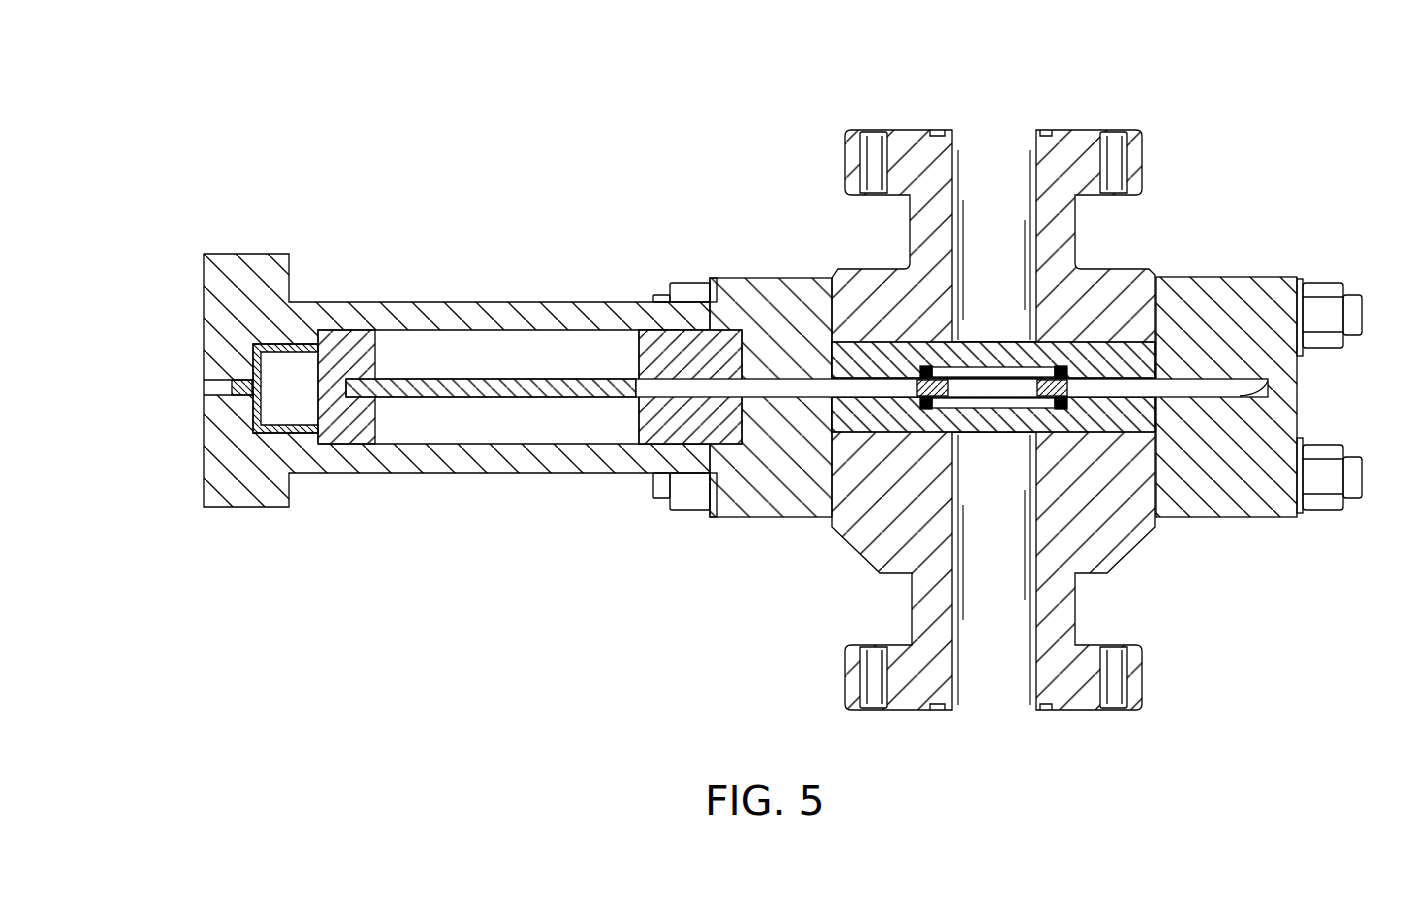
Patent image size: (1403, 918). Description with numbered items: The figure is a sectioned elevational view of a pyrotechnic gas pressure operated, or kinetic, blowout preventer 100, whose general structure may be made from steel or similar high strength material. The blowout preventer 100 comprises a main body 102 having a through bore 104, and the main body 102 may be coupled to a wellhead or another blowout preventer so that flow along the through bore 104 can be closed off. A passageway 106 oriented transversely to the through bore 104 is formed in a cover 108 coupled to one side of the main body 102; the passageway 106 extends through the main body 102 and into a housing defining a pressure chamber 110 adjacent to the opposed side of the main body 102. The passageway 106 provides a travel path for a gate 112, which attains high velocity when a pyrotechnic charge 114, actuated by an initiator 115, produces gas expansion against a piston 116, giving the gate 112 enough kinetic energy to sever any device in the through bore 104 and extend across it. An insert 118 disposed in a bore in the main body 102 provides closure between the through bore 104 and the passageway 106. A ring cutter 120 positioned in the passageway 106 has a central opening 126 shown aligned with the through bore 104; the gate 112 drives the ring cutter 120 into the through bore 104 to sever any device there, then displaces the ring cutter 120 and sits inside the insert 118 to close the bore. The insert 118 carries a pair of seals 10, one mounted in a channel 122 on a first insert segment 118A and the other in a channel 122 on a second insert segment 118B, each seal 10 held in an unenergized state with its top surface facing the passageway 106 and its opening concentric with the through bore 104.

The pyrotechnic gas pressure operated blowout preventer 100 is at (1196, 119).
The main body 102 is at (1077, 130).
The through bore 104 is at (1016, 178).
The passageway 106 is at (1270, 387).
The cover 108 is at (1262, 277).
The seal 10 is at (893, 342).
The pressure chamber 110 is at (393, 462).
The gate 112 is at (510, 379).
The pyrotechnic charge 114 is at (287, 405).
The initiator 115 is at (230, 387).
The piston 116 is at (352, 348).
The insert 118 is at (830, 372).
The first insert segment 118A is at (1047, 350).
The second insert segment 118B is at (920, 417).
The ring cutter 120 is at (868, 535).
The channel 122 is at (1057, 366).
The central opening 126 is at (993, 388).